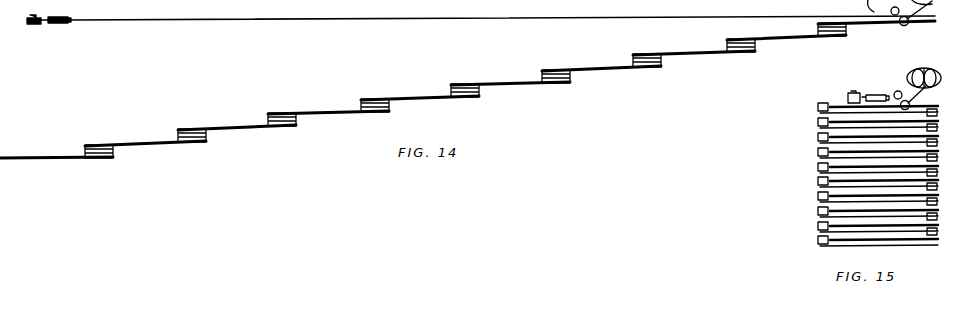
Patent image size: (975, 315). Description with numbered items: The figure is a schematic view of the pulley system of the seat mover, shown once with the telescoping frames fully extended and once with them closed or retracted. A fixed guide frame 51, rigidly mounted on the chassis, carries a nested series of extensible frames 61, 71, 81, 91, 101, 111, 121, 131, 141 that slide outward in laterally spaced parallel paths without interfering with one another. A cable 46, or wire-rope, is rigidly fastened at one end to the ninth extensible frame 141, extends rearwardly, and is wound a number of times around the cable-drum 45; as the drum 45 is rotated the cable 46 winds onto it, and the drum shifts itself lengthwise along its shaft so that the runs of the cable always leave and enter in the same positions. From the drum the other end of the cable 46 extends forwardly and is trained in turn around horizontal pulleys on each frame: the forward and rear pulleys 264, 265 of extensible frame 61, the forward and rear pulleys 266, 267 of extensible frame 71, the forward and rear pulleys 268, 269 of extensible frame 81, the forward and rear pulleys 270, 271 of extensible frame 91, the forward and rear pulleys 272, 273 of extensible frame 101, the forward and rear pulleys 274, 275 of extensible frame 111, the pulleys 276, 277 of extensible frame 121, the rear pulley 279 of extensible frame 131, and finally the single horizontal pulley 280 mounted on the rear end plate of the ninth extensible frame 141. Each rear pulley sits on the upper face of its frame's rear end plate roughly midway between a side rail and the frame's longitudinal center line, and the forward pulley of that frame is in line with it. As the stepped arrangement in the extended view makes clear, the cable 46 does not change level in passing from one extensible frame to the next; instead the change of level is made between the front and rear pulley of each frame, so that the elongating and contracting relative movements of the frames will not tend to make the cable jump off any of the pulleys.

In FIG. 15, the cable-drum 45 is at (932, 68).
In FIG. 14, the cable 46 is at (156, 24).
In FIG. 15, the cable 46 is at (927, 106).
In FIG. 14, the guide frame 51 is at (905, 29).
In FIG. 15, the guide frame 51 is at (819, 106).
In FIG. 14, the extensible frame 61 is at (774, 40).
In FIG. 15, the extensible frame 61 is at (819, 122).
In FIG. 14, the extensible frame 71 is at (676, 52).
In FIG. 15, the extensible frame 71 is at (819, 136).
In FIG. 14, the extensible frame 81 is at (597, 55).
In FIG. 15, the extensible frame 81 is at (817, 150).
In FIG. 14, the extensible frame 91 is at (512, 82).
In FIG. 15, the extensible frame 91 is at (816, 170).
In FIG. 14, the extensible frame 101 is at (418, 104).
In FIG. 15, the extensible frame 101 is at (816, 184).
In FIG. 14, the extensible frame 111 is at (330, 107).
In FIG. 15, the extensible frame 111 is at (816, 199).
In FIG. 14, the extensible frame 121 is at (240, 113).
In FIG. 15, the extensible frame 121 is at (816, 214).
In FIG. 14, the extensible frame 131 is at (142, 140).
In FIG. 15, the extensible frame 131 is at (818, 229).
In FIG. 14, the ninth extensible frame 141 is at (26, 160).
In FIG. 15, the ninth extensible frame 141 is at (820, 246).
In FIG. 14, the forward pulley 264 is at (740, 54).
In FIG. 14, the rear pulley 265 is at (856, 38).
In FIG. 14, the forward pulley 266 is at (644, 68).
In FIG. 14, the rear pulley 267 is at (757, 50).
In FIG. 14, the forward pulley 268 is at (551, 94).
In FIG. 14, the rear pulley 269 is at (668, 68).
In FIG. 14, the forward pulley 270 is at (454, 86).
In FIG. 14, the rear pulley 271 is at (572, 82).
In FIG. 14, the forward pulley 272 is at (362, 126).
In FIG. 14, the rear pulley 273 is at (392, 102).
In FIG. 14, the forward pulley 274 is at (268, 136).
In FIG. 14, the rear pulley 275 is at (384, 98).
In FIG. 14, the rear pulley 276 is at (178, 146).
In FIG. 14, the forward pulley 277 is at (292, 132).
In FIG. 14, the rear pulley 279 is at (210, 144).
In FIG. 14, the horizontal pulley 280 is at (96, 140).